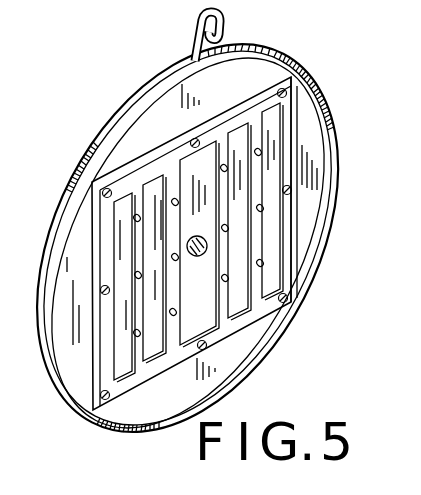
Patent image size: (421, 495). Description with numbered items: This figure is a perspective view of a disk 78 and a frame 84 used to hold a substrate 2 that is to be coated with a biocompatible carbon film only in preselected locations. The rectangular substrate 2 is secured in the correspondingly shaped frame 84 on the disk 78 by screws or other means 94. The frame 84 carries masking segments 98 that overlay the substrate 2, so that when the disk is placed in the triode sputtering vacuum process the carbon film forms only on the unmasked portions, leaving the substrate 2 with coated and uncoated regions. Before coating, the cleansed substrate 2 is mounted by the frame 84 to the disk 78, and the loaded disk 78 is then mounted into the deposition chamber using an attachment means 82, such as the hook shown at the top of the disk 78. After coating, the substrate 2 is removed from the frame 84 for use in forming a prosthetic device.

The attachment means 82 is at (224, 22).
The disk 78 is at (293, 83).
The frame 84 is at (288, 143).
The masking segments 98 is at (257, 237).
The substrate 2 is at (193, 277).
The screws 94 is at (104, 293).